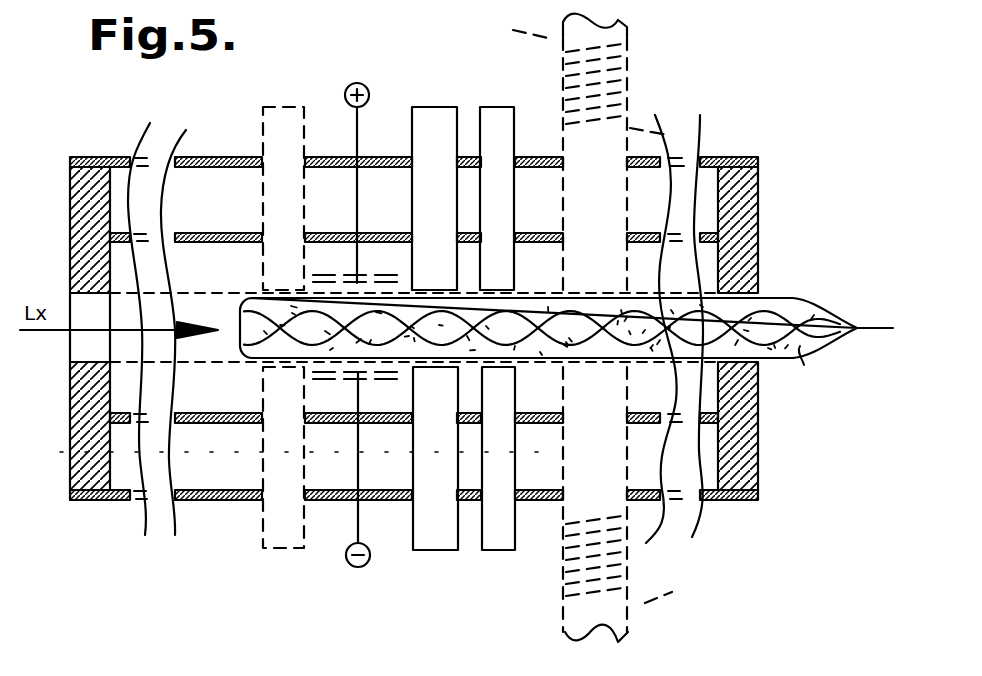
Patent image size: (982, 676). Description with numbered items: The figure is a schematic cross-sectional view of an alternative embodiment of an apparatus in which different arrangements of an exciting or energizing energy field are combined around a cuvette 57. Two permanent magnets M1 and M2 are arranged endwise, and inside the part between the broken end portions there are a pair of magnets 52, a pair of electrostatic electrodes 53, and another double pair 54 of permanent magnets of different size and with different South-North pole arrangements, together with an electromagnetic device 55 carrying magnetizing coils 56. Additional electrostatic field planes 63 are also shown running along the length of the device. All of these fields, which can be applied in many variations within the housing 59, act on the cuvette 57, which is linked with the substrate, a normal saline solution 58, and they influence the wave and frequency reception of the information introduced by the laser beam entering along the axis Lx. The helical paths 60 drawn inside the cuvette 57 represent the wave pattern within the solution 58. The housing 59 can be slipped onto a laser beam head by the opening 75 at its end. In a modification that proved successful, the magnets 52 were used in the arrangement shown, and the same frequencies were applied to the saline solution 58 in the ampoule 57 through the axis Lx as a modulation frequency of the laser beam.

The pair of magnets 52 is at (288, 550).
The pair of electrostatic electrodes 53 is at (358, 83).
The double pair of permanent magnets 54 is at (497, 107).
The electromagnetic device 55 is at (590, 200).
The magnetizing coils 56 is at (628, 67).
The cuvette 57 is at (781, 300).
The saline solution 58 is at (800, 346).
The housing 59 is at (236, 500).
The helical particle paths 60 is at (589, 346).
The electrostatic field planes 63 is at (224, 233).
The opening 75 is at (88, 338).
The permanent magnet M1 is at (100, 156).
The permanent magnet M2 is at (752, 156).